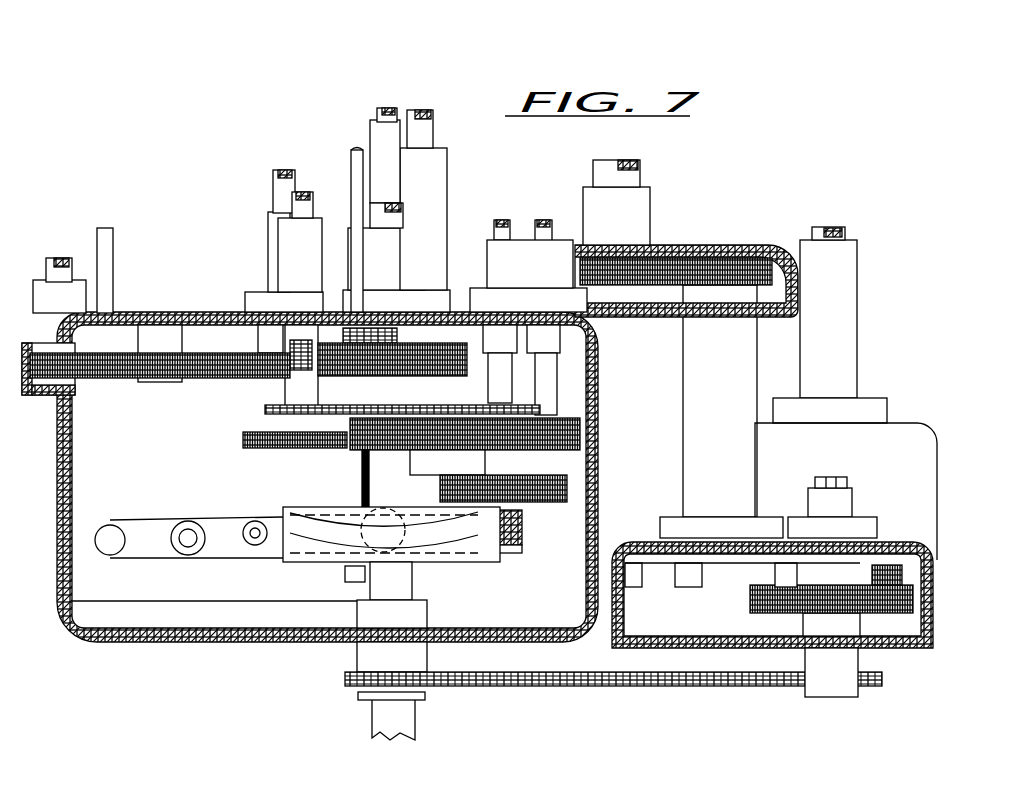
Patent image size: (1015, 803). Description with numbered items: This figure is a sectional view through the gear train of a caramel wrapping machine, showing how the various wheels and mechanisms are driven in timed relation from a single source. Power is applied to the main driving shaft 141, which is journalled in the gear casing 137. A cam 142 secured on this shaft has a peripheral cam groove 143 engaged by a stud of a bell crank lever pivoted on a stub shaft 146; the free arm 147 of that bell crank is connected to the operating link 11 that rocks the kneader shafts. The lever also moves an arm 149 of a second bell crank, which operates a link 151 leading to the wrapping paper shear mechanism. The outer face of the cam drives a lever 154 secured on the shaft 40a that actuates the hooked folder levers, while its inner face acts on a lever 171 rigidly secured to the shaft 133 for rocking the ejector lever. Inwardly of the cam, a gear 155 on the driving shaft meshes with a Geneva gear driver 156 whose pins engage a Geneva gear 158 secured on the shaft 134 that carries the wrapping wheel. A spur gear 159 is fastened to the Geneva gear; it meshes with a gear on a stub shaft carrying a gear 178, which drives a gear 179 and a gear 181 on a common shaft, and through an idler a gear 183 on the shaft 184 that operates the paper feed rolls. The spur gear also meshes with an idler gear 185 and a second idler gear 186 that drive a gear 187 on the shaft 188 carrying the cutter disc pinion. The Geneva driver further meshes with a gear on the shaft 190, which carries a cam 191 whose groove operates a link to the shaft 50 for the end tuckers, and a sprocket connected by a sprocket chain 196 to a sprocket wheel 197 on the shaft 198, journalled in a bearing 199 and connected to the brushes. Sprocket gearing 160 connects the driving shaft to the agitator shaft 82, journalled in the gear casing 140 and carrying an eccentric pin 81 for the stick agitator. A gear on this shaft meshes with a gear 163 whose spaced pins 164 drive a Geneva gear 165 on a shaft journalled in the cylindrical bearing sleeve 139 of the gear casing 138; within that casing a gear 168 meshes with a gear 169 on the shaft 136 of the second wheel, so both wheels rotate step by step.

The operating link 11 is at (105, 295).
The shaft 40a is at (410, 97).
The shaft 50 is at (547, 230).
The eccentric pin 81 is at (840, 620).
The agitator shaft 82 is at (827, 225).
The shaft 133 is at (430, 127).
The shaft 134 is at (397, 220).
The shaft 136 is at (642, 186).
The gear casing 137 is at (200, 298).
The gear casing 138 is at (760, 228).
The cylindrical bearing sleeve 139 is at (705, 418).
The gear casing 140 is at (890, 650).
The main driving shaft 141 is at (412, 578).
The cam 142 is at (300, 548).
The peripheral cam groove 143 is at (522, 540).
The stub shaft 146 is at (190, 545).
The free arm 147 is at (155, 548).
The arm 149 is at (232, 604).
The link 151 is at (353, 165).
The lever 154 is at (350, 578).
The gear 155 is at (355, 450).
The Geneva gear driver 156 is at (528, 440).
The Geneva gear 158 is at (440, 415).
The spur gear 159 is at (476, 285).
The sprocket gearing 160 is at (560, 686).
The gear 163 is at (910, 598).
The spaced pins 164 is at (893, 556).
The Geneva gear 165 is at (665, 578).
The gear 168 is at (705, 318).
The gear 169 is at (668, 246).
The lever 171 is at (465, 445).
The gear 178 is at (440, 355).
The gear 179 is at (345, 338).
The gear 181 is at (345, 440).
The gear 183 is at (243, 440).
The shaft 184 is at (277, 196).
The idler gear 185 is at (280, 362).
The second idler gear 186 is at (170, 378).
The gear 187 is at (66, 388).
The shaft 188 is at (63, 270).
The shaft 190 is at (517, 207).
The cam 191 is at (565, 489).
The sprocket chain 196 is at (395, 448).
The sprocket wheel 197 is at (270, 410).
The shaft 198 is at (306, 197).
The bearing 199 is at (292, 242).